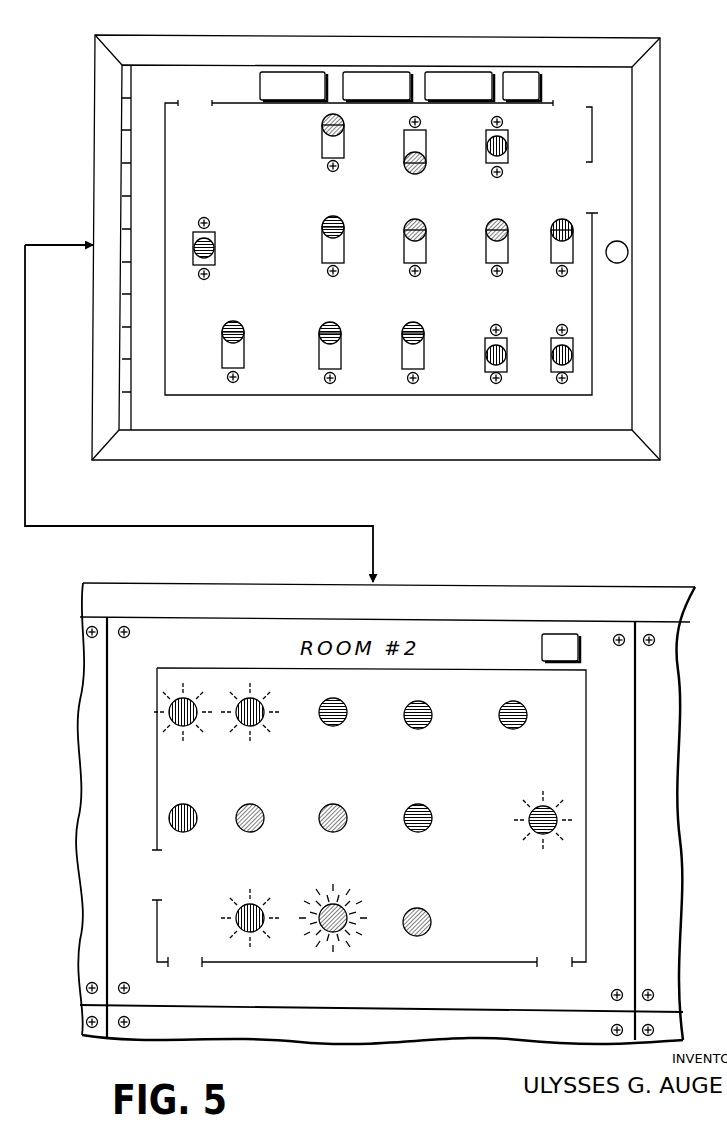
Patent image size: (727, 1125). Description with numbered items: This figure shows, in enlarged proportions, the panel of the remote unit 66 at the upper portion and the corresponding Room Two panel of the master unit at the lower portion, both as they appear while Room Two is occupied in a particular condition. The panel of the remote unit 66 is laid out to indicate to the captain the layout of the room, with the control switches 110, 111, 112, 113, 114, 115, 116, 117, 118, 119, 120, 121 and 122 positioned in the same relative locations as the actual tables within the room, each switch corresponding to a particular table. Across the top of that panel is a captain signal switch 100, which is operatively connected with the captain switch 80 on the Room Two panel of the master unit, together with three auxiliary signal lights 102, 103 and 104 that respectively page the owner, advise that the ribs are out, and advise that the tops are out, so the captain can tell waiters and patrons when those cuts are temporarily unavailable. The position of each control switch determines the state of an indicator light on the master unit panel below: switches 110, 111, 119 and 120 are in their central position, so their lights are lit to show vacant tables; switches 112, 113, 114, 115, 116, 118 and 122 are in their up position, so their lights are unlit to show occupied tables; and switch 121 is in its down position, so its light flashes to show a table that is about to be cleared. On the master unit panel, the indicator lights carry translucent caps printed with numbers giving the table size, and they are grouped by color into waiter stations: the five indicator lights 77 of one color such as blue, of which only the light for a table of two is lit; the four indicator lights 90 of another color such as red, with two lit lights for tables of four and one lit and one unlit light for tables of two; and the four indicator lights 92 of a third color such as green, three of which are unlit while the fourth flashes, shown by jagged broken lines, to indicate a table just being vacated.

The remote unit 66 is at (636, 35).
The captain signal switch 100 is at (528, 69).
The auxiliary signal light 102 is at (290, 62).
The auxiliary signal light 103 is at (376, 66).
The auxiliary signal light 104 is at (455, 66).
The control switch 110 is at (574, 352).
The control switch 111 is at (508, 352).
The control switch 112 is at (427, 333).
The control switch 113 is at (344, 330).
The control switch 114 is at (246, 330).
The control switch 115 is at (568, 218).
The control switch 116 is at (506, 217).
The control switch 117 is at (425, 222).
The control switch 118 is at (347, 222).
The control switch 119 is at (217, 235).
The control switch 120 is at (511, 138).
The control switch 121 is at (450, 157).
The control switch 122 is at (367, 113).
The captain switch 80 is at (572, 631).
The indicator lights 90 is at (242, 888).
The indicator lights 77 is at (350, 727).
The indicator lights 92 is at (265, 833).